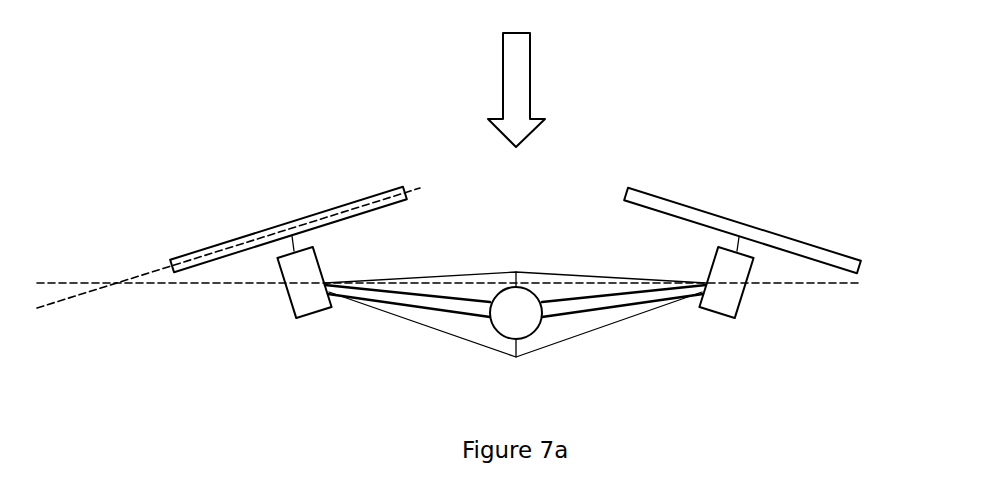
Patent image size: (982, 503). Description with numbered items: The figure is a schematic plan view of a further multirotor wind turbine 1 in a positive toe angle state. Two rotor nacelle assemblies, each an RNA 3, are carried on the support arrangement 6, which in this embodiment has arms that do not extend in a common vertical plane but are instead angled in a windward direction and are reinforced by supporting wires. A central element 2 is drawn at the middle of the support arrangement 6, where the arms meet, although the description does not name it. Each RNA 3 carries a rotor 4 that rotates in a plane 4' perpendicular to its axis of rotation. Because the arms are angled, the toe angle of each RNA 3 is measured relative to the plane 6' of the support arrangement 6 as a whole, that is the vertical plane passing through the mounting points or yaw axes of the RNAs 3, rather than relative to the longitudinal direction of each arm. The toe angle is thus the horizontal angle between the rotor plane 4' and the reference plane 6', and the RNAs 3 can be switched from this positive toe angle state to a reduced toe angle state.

The wind turbine 1 is at (679, 132).
The central ball / load element 2 is at (537, 332).
The RNA 3 is at (317, 313).
The rotor 4 is at (288, 197).
The plane of the rotor 4' is at (228, 247).
The support arrangement 6 is at (628, 345).
The plane of the support arrangement 6' is at (447, 347).